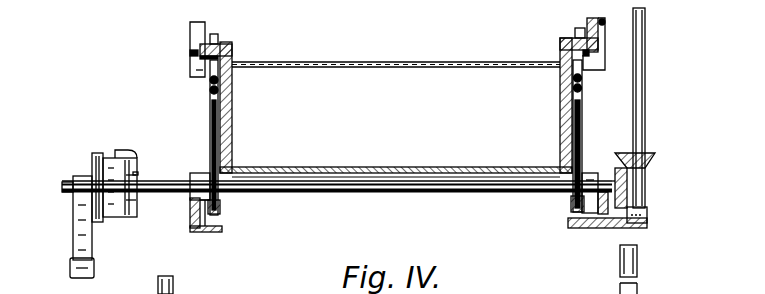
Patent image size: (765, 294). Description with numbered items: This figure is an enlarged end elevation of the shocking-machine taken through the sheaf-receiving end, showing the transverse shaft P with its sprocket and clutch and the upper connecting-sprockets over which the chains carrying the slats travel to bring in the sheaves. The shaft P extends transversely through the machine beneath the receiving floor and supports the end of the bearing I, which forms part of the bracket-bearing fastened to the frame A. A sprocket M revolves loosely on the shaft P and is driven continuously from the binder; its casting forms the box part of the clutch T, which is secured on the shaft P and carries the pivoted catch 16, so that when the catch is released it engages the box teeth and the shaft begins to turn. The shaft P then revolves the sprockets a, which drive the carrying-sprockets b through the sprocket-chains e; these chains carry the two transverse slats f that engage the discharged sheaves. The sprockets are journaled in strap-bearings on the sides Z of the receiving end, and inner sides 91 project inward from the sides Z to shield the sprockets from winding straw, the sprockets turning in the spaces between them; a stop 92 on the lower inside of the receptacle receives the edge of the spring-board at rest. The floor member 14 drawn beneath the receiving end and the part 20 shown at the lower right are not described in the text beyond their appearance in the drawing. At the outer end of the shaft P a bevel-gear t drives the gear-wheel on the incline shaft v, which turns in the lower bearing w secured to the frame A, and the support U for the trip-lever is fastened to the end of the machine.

The inner sides 91 is at (232, 128).
The tray bottom 14 is at (400, 160).
The transverse slats f is at (396, 62).
The shaft P is at (62, 187).
The bearing I is at (73, 237).
The sprocket M is at (98, 153).
The pivoted catch 16 is at (126, 150).
The clutch T is at (137, 174).
The frame A is at (418, 213).
The sprocket-chains e is at (210, 128).
The sprockets a is at (220, 210).
The carrying-sprockets b is at (210, 94).
The sides Z is at (203, 24).
The stop 92 is at (190, 47).
The bevel-gear t is at (612, 212).
The support U is at (650, 155).
The incline shaft v is at (645, 93).
The lower bearing w is at (647, 221).
The coupling piece 20 is at (644, 269).